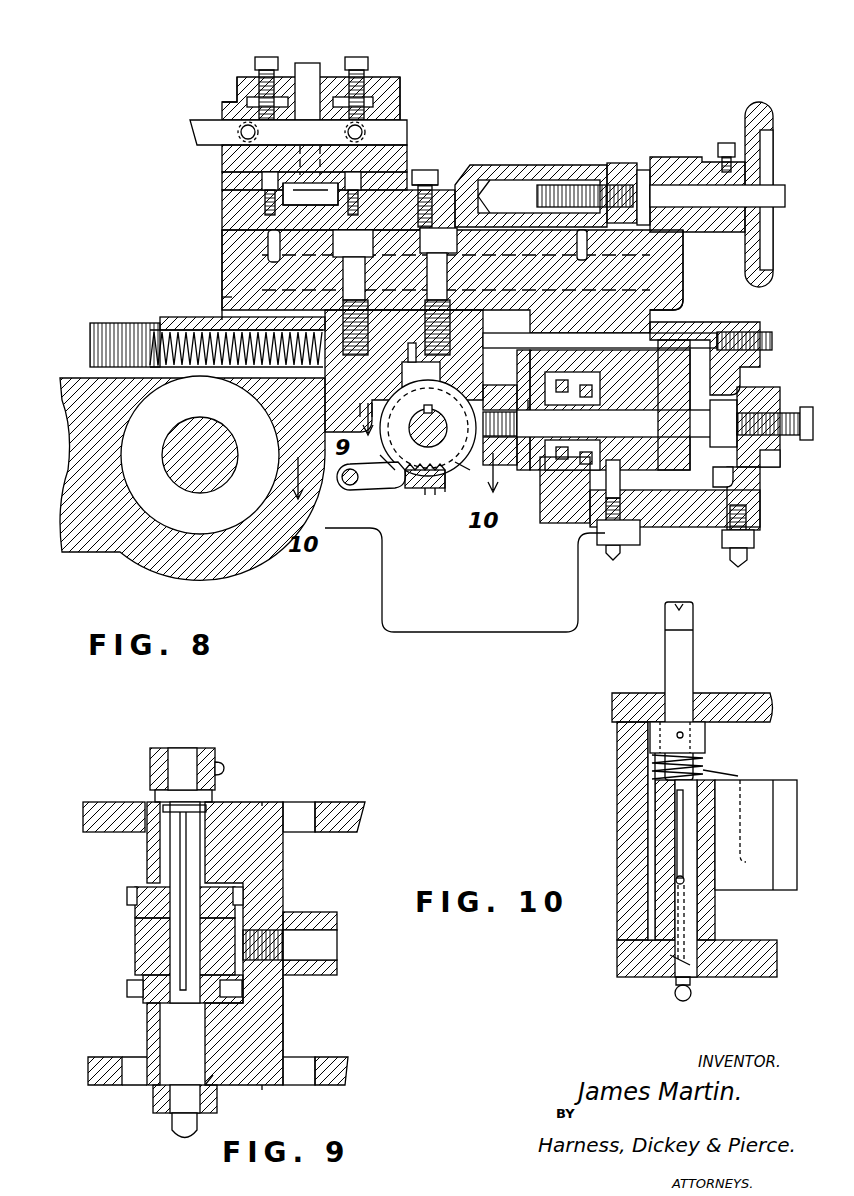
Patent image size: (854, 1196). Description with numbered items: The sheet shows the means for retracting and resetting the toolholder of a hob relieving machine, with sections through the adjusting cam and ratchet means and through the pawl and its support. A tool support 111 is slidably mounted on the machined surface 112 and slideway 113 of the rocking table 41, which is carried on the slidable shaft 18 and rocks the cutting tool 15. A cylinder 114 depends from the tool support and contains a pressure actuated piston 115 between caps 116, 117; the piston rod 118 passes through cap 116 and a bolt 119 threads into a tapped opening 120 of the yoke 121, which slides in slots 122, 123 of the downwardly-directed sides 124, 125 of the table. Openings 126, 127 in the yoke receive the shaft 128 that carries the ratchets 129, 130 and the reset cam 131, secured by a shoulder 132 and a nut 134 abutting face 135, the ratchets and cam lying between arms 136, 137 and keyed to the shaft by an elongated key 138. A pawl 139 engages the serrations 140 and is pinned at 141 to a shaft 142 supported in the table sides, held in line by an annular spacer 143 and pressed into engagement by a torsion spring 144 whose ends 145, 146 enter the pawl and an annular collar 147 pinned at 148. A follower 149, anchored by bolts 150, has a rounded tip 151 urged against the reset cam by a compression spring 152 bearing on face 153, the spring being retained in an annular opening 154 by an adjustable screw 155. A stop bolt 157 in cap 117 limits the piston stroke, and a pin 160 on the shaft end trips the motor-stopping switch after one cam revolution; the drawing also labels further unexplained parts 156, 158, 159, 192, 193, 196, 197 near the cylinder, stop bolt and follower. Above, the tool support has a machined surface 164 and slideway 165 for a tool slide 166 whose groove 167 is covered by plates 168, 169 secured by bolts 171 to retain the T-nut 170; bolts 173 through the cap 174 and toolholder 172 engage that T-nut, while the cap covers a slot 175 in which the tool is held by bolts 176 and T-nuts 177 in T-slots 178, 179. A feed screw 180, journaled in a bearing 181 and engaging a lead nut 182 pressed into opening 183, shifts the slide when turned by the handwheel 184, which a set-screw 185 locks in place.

In FIG. 8, the cutting tool 15 is at (197, 138).
In FIG. 8, the slidable shaft 18 is at (200, 493).
In FIG. 8, the table 41 is at (66, 380).
In FIG. 8, the tool support 111 is at (660, 278).
In FIG. 8, the machined surface 112 is at (222, 320).
In FIG. 8, the slideway 113 is at (222, 296).
In FIG. 8, the cylinder 114 is at (690, 528).
In FIG. 8, the piston 115 is at (690, 455).
In FIG. 8, the cap 116 is at (548, 523).
In FIG. 8, the cap 117 is at (760, 500).
In FIG. 8, the piston rod 118 is at (500, 467).
In FIG. 9, the piston rod 118 is at (330, 915).
In FIG. 8, the bolt 119 is at (575, 437).
In FIG. 9, the bolt 119 is at (330, 946).
In FIG. 8, the tapped opening 120 is at (496, 412).
In FIG. 9, the tapped opening 120 is at (278, 928).
In FIG. 8, the yoke 121 is at (519, 405).
In FIG. 9, the yoke 121 is at (283, 1020).
In FIG. 9, the slot 122 is at (300, 1062).
In FIG. 8, the slot 123 is at (462, 472).
In FIG. 9, the slot 123 is at (300, 806).
In FIG. 9, the side 124 is at (342, 1086).
In FIG. 10, the side 124 is at (745, 978).
In FIG. 8, the side 125 is at (578, 608).
In FIG. 9, the side 125 is at (362, 803).
In FIG. 10, the side 125 is at (770, 708).
In FIG. 9, the opening 126 is at (218, 1085).
In FIG. 9, the opening 127 is at (210, 818).
In FIG. 8, the shaft 128 is at (425, 440).
In FIG. 9, the shaft 128 is at (190, 749).
In FIG. 9, the ratchet 129 is at (143, 990).
In FIG. 8, the ratchet 130 is at (405, 496).
In FIG. 9, the ratchet 130 is at (135, 900).
In FIG. 8, the reset cam 131 is at (415, 490).
In FIG. 9, the reset cam 131 is at (135, 956).
In FIG. 9, the shoulder 132 is at (150, 790).
In FIG. 9, the nut 134 is at (158, 1101).
In FIG. 9, the face 135 is at (262, 803).
In FIG. 9, the arm 136 is at (147, 1022).
In FIG. 9, the arm 137 is at (147, 851).
In FIG. 8, the elongated key 138 is at (486, 385).
In FIG. 9, the elongated key 138 is at (178, 928).
In FIG. 8, the pawl 139 is at (436, 494).
In FIG. 10, the pawl 139 is at (776, 780).
In FIG. 8, the serrations 140 is at (425, 496).
In FIG. 9, the serrations 140 is at (127, 893).
In FIG. 10, the pin 141 is at (677, 822).
In FIG. 10, the shaft 142 is at (690, 679).
In FIG. 10, the annular spacer 143 is at (715, 918).
In FIG. 10, the torsion spring 144 is at (705, 769).
In FIG. 10, the spring end 145 is at (749, 823).
In FIG. 10, the spring end 146 is at (648, 749).
In FIG. 10, the annular collar 147 is at (705, 741).
In FIG. 10, the pin 148 is at (677, 735).
In FIG. 8, the follower 149 is at (483, 338).
In FIG. 8, the bolts 150 is at (343, 273).
In FIG. 8, the rounded tip 151 is at (371, 483).
In FIG. 8, the compression spring 152 is at (158, 326).
In FIG. 8, the face 153 is at (333, 376).
In FIG. 8, the annular opening 154 is at (222, 290).
In FIG. 8, the screw 155 is at (98, 327).
In FIG. 8, the nut 156 is at (638, 545).
In FIG. 8, the bolt 157 is at (745, 398).
In FIG. 8, the housing top 158 is at (718, 388).
In FIG. 8, the stop 159 is at (448, 493).
In FIG. 10, the stop 159 is at (790, 816).
In FIG. 9, the pin 160 is at (224, 767).
In FIG. 8, the machined surface 164 is at (235, 228).
In FIG. 8, the slideway 165 is at (235, 250).
In FIG. 8, the tool slide 166 is at (468, 165).
In FIG. 8, the groove 167 is at (311, 205).
In FIG. 8, the plate 168 is at (438, 174).
In FIG. 8, the plate 169 is at (222, 180).
In FIG. 8, the T-nut 170 is at (325, 183).
In FIG. 8, the bolts 171 is at (222, 192).
In FIG. 8, the toolholder 172 is at (415, 168).
In FIG. 8, the bolts 173 is at (320, 66).
In FIG. 8, the cap 174 is at (400, 101).
In FIG. 8, the slot 175 is at (222, 150).
In FIG. 8, the bolts 176 is at (268, 57).
In FIG. 8, the T-nuts 177 is at (284, 97).
In FIG. 8, the T-slot 178 is at (400, 87).
In FIG. 8, the T-slot 179 is at (240, 94).
In FIG. 8, the feed screw 180 is at (560, 188).
In FIG. 8, the bearing 181 is at (652, 157).
In FIG. 8, the lead nut 182 is at (598, 172).
In FIG. 8, the opening 183 is at (522, 186).
In FIG. 8, the handwheel 184 is at (758, 104).
In FIG. 8, the set-screw 185 is at (735, 131).
In FIG. 8, the bolt 192 is at (752, 556).
In FIG. 8, the notch 193 is at (748, 472).
In FIG. 8, the bearing 196 is at (595, 478).
In FIG. 8, the bolt 197 is at (606, 549).